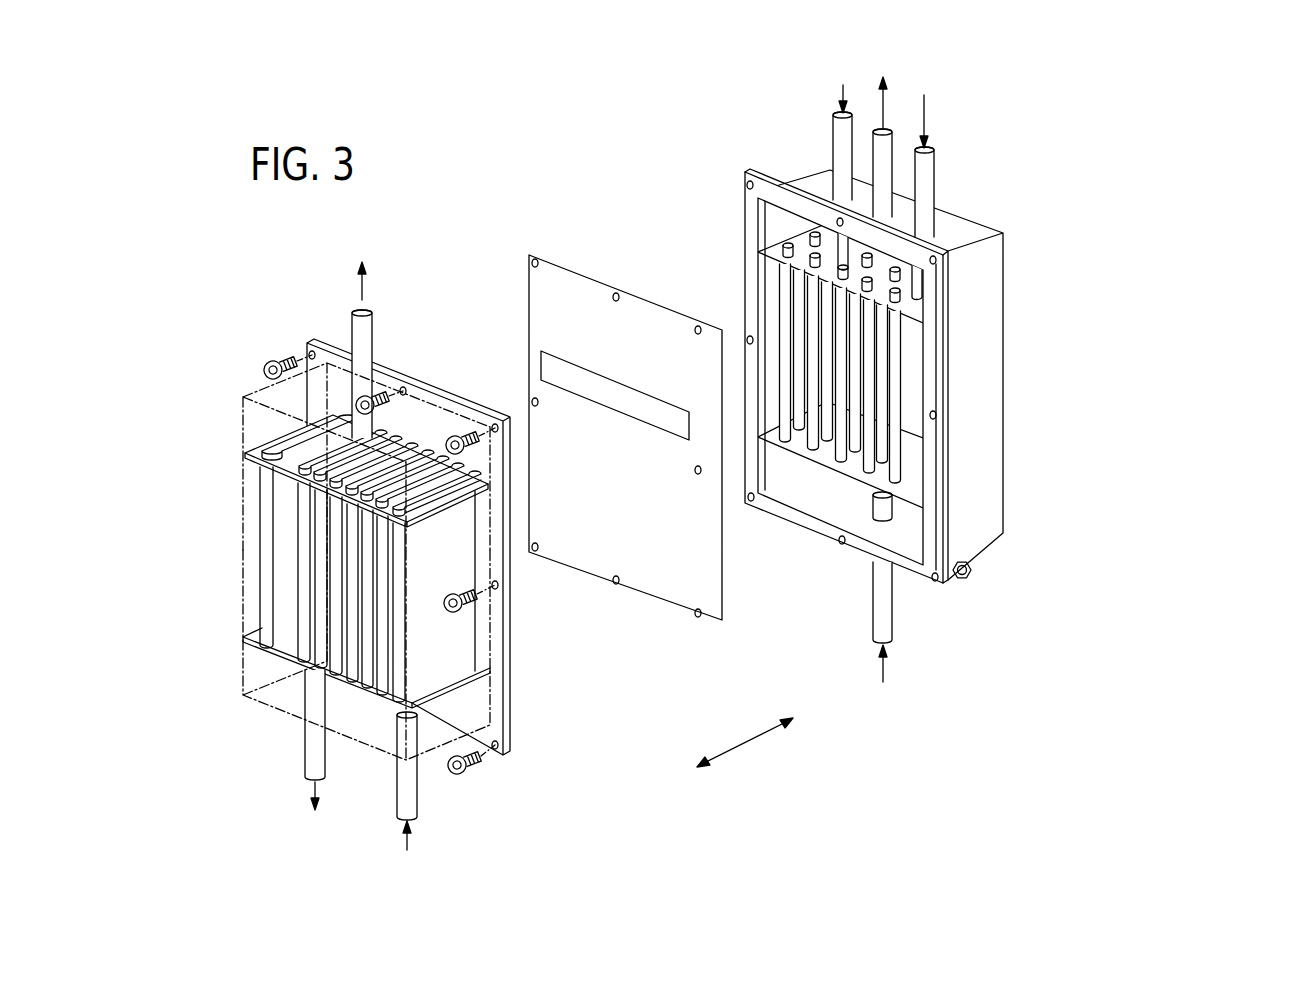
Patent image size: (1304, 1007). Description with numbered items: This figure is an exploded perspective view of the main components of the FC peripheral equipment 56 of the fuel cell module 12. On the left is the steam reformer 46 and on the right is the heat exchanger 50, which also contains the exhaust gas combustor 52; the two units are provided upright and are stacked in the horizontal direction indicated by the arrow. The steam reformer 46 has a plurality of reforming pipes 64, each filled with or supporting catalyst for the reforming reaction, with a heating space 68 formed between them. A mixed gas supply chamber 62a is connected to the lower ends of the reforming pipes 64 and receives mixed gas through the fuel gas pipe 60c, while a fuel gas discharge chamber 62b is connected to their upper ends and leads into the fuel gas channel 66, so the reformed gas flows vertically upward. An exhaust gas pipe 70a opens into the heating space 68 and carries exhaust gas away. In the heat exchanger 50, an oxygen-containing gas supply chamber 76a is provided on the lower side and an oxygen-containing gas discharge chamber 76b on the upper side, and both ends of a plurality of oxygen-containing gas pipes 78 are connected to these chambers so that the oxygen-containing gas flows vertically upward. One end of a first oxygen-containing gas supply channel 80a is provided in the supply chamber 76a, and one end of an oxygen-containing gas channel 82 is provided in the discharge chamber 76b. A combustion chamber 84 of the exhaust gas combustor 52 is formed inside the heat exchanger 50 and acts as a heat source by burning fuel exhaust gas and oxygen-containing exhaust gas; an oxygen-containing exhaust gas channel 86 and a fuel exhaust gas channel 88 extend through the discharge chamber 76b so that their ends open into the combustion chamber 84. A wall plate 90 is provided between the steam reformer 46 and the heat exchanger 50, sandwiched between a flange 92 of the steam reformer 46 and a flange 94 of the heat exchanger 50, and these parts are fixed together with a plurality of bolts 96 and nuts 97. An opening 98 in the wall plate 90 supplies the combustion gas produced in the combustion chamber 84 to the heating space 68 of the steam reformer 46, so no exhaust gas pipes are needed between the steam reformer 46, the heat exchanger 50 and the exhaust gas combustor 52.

The fuel cell module 12 is at (400, 229).
The FC peripheral equipment 56 is at (358, 229).
The steam reformer 46 is at (256, 556).
The heat exchanger 50 is at (987, 535).
The exhaust gas combustor 52 is at (798, 298).
The fuel gas pipe 60c is at (410, 798).
The mixed gas supply chamber 62a is at (357, 720).
The fuel gas discharge chamber 62b is at (262, 425).
The reforming pipes 64 is at (300, 590).
The fuel gas channel 66 is at (366, 336).
The heating space 68 is at (283, 527).
The exhaust gas pipe 70a is at (313, 752).
The oxygen-containing gas supply chamber 76a is at (812, 487).
The oxygen-containing gas discharge chamber 76b is at (783, 222).
The oxygen-containing gas pipes 78 is at (893, 340).
The first oxygen-containing gas supply channel 80a is at (878, 588).
The oxygen-containing gas channel 82 is at (883, 190).
The combustion chamber 84 is at (883, 364).
The oxygen-containing exhaust gas channel 86 is at (926, 179).
The fuel exhaust gas channel 88 is at (832, 126).
The wall plate 90 is at (701, 645).
The flange 92 is at (515, 695).
The flange 94 is at (935, 470).
The bolts 96 is at (467, 768).
The nuts 97 is at (967, 584).
The opening 98 is at (638, 420).